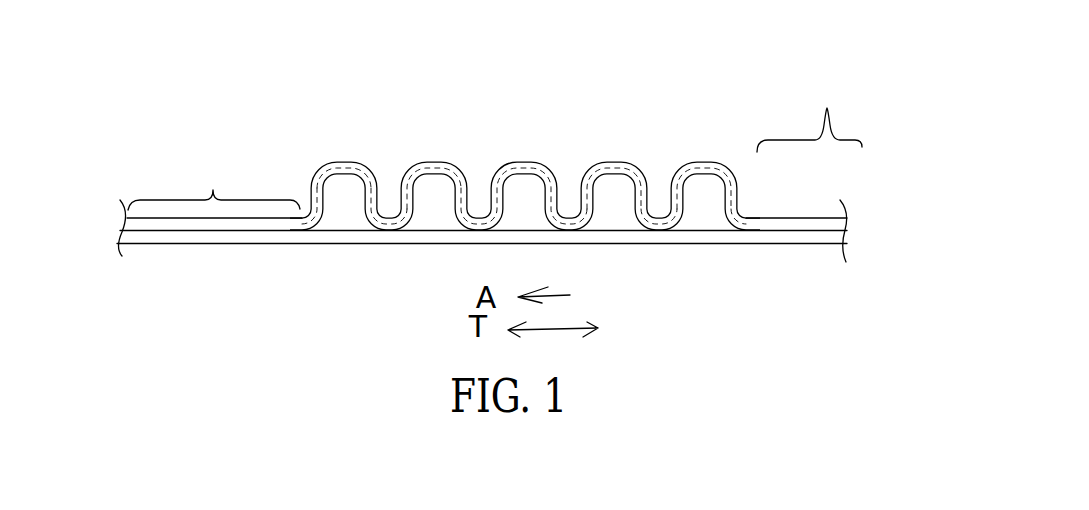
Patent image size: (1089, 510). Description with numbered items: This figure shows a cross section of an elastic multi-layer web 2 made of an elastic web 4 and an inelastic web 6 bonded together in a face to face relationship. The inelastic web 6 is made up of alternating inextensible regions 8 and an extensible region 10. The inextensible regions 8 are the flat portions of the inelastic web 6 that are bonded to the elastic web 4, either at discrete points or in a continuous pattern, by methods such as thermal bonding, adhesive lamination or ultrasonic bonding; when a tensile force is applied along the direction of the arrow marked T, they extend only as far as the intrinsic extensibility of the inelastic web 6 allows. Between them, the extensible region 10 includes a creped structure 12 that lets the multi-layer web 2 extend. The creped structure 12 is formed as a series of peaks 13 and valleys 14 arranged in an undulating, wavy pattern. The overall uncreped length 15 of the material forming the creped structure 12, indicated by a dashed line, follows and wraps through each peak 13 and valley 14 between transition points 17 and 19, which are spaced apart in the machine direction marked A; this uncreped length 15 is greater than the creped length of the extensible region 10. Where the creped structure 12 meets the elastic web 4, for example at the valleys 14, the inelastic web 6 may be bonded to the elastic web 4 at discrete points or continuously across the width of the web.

The elastic multi-layer web 2 is at (950, 175).
The elastic web 4 is at (787, 243).
The inelastic web 6 is at (781, 218).
The inextensible region 8 is at (495, 137).
The extensible region 10 is at (745, 160).
The creped structure 12 is at (429, 174).
The peak 13 is at (613, 162).
The valley 14 is at (377, 230).
The overall uncreped length 15 is at (700, 162).
The transition point 17 is at (742, 222).
The transition point 19 is at (310, 230).